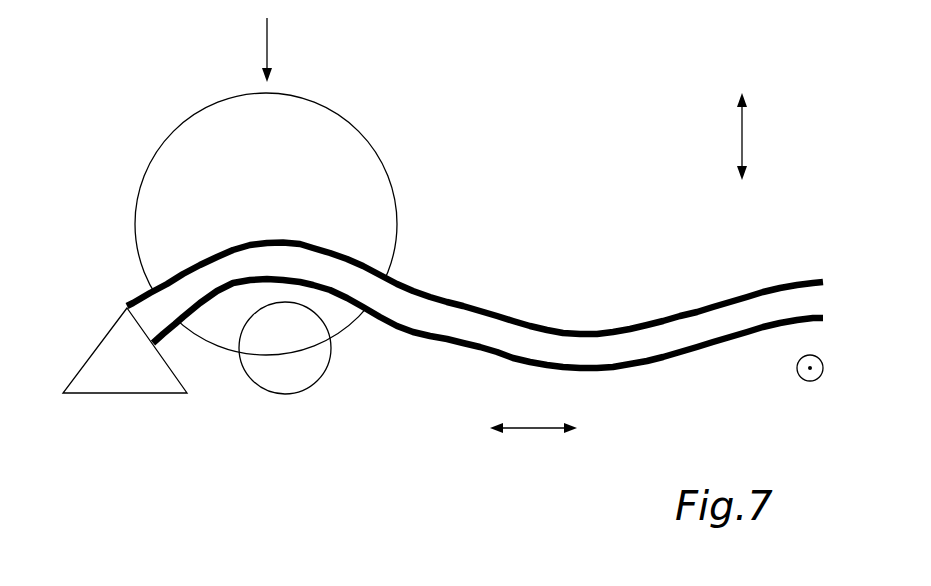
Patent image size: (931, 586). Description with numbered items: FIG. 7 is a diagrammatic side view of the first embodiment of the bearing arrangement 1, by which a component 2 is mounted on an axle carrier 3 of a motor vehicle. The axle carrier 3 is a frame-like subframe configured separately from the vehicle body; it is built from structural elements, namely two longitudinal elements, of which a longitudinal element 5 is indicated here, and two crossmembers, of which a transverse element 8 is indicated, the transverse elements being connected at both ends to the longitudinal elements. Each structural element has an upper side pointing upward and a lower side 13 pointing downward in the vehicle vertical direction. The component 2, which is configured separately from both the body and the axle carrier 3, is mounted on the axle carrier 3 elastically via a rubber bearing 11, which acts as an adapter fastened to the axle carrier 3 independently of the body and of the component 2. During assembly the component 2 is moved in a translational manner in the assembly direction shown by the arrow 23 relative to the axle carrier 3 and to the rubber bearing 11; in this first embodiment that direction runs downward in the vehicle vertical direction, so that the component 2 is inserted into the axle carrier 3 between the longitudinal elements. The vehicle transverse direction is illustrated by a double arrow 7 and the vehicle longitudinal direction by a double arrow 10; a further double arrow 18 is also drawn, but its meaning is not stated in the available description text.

The bearing arrangement 1 is at (82, 277).
The component 2 is at (348, 148).
The axle carrier 3 is at (475, 345).
The longitudinal element 5 is at (490, 310).
The double arrow 7 is at (816, 381).
The transverse element 8 is at (145, 385).
The double arrow 10 is at (533, 428).
The rubber bearing 11 is at (320, 392).
The lower side 13 is at (483, 353).
The vertical movement direction 18 is at (742, 142).
The arrow 23 is at (267, 48).